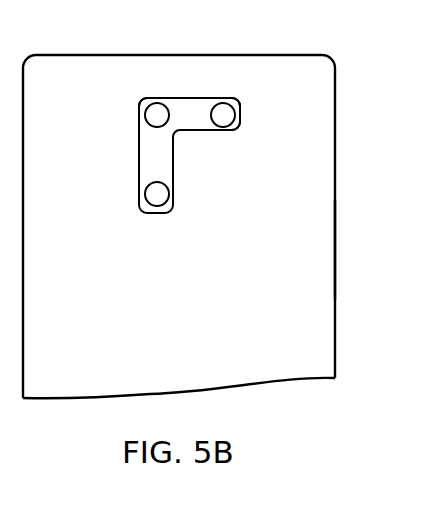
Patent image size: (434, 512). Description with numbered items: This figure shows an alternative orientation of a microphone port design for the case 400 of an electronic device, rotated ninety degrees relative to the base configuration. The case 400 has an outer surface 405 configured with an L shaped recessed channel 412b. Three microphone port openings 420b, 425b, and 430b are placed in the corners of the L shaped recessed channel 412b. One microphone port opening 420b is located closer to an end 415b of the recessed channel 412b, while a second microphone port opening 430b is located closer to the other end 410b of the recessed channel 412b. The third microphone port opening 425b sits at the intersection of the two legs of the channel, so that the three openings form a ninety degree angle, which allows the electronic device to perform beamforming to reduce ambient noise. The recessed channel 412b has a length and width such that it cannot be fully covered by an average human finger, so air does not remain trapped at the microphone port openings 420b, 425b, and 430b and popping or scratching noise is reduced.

The case 400 is at (245, 56).
The outer surface 405 is at (318, 243).
The end of the recessed channel 410b is at (143, 211).
The L shaped recessed channel 412b is at (141, 99).
The end of the recessed channel 415b is at (240, 128).
The microphone port opening 420b is at (227, 112).
The microphone port opening 425b is at (152, 117).
The microphone port opening 430b is at (158, 198).